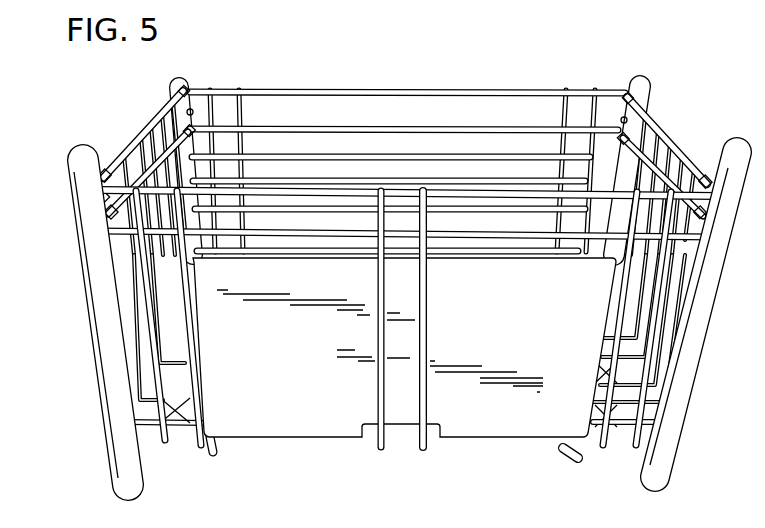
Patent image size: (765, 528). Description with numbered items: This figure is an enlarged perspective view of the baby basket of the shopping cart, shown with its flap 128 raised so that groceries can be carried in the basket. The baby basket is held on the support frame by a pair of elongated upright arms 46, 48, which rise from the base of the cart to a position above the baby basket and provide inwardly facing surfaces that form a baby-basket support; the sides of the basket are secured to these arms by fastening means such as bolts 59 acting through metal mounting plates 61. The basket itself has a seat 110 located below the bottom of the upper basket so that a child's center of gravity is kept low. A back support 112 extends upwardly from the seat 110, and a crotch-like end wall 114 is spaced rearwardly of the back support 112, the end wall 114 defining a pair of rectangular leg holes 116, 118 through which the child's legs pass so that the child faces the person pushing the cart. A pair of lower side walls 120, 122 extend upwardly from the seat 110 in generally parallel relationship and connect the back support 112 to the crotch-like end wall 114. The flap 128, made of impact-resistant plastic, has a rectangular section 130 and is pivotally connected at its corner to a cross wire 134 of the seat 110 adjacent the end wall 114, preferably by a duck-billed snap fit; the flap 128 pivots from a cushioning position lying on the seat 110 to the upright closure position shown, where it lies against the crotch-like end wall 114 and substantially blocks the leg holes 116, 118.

The upright arm 46 is at (90, 330).
The upright arm 48 is at (690, 403).
The bolt 59 is at (105, 203).
The metal mounting plate 61 is at (107, 215).
The seat 110 is at (147, 425).
The back support 112 is at (498, 57).
The crotch-like end wall 114 is at (183, 425).
The leg hole 116 is at (193, 343).
The leg hole 118 is at (427, 335).
The lower side wall 120 is at (158, 114).
The lower side wall 122 is at (662, 129).
The flap 128 is at (297, 439).
The rectangular section 130 is at (593, 393).
The cross wire 134 is at (615, 443).